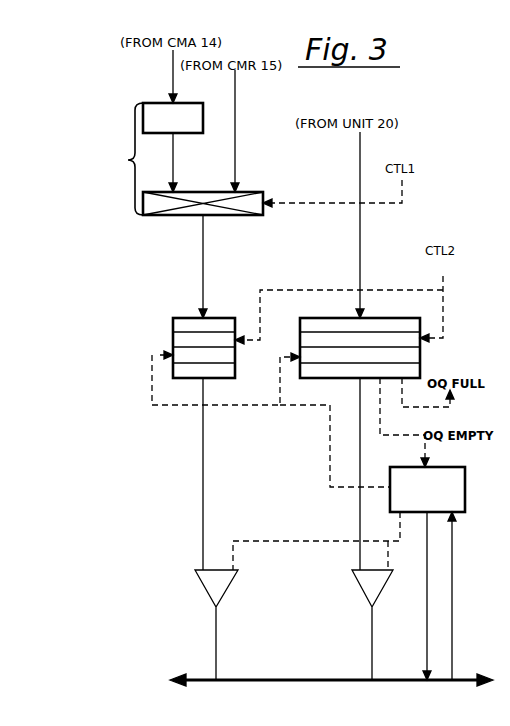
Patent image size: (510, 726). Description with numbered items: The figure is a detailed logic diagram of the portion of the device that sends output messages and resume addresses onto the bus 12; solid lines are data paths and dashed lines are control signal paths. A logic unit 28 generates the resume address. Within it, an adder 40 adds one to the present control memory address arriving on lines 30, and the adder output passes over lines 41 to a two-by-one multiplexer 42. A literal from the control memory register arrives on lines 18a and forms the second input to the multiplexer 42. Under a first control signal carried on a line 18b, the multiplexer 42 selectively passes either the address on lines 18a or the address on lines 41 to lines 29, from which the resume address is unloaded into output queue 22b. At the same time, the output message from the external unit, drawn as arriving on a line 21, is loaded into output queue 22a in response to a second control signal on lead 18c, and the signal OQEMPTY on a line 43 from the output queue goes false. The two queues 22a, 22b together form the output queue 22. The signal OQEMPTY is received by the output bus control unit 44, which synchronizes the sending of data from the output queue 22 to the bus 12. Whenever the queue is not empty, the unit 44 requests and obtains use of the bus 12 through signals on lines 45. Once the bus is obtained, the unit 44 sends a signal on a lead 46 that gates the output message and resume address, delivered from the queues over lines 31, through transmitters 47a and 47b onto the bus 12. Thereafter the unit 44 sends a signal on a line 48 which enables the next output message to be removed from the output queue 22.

The bus 12 is at (292, 676).
The lines 18a is at (237, 140).
The line 18b is at (320, 204).
The lead 18c is at (443, 282).
The data line from unit 20 21 is at (362, 254).
The output queue 22 is at (298, 352).
The output queue 22a is at (420, 354).
The output queue 22b is at (173, 318).
The logic unit 28 is at (122, 159).
The lines 29 is at (205, 280).
The lines 30 is at (172, 94).
The output lines 31 is at (204, 496).
The adder 40 is at (200, 103).
The lines 41 is at (176, 174).
The 2×1 multiplexer 42 is at (264, 193).
The line 43 is at (386, 436).
The output bus control unit 44 is at (451, 467).
The lines 45 is at (452, 652).
The lead 46 is at (311, 543).
The transmitter 47a is at (361, 590).
The transmitter 47b is at (206, 590).
The line 48 is at (328, 462).